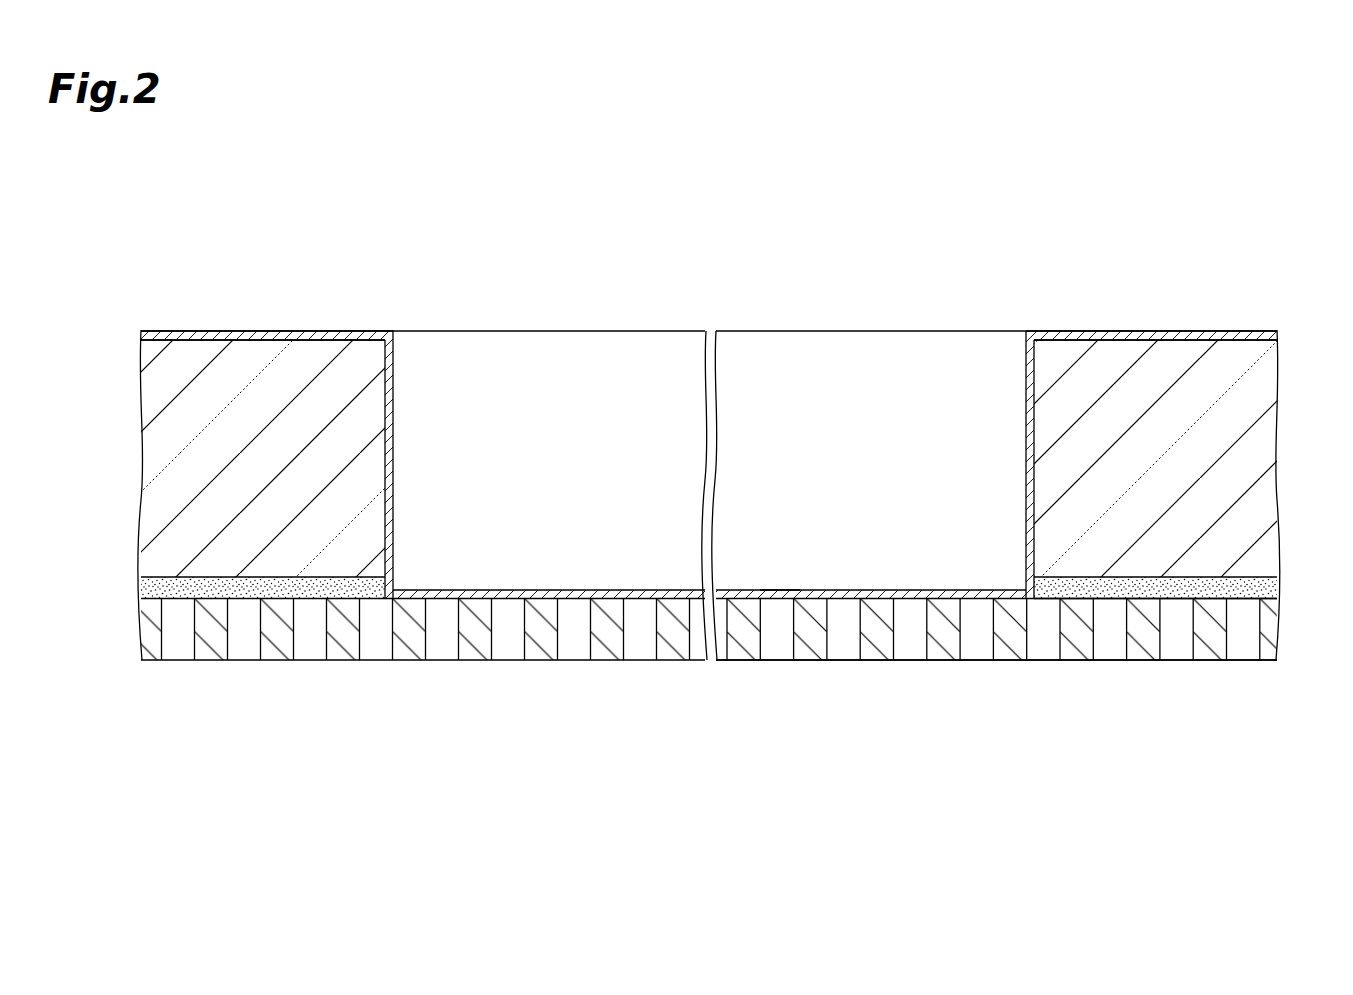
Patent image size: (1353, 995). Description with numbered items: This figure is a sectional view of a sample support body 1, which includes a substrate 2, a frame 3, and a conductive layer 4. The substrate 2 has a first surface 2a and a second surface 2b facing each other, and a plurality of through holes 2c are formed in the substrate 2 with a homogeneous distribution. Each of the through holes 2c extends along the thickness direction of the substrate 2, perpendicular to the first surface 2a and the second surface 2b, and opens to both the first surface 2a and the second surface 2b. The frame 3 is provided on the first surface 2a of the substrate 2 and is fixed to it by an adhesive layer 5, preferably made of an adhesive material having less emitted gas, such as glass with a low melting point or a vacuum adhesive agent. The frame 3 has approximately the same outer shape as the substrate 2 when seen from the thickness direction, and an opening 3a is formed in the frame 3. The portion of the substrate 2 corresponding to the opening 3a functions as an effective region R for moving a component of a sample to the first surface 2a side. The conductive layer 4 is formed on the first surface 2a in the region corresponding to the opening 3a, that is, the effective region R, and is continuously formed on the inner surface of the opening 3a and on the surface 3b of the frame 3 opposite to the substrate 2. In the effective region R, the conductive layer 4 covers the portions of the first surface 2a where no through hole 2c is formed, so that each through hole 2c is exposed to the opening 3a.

The sample support body 1 is at (1057, 230).
The substrate 2 is at (1268, 628).
The first surface 2a is at (1275, 588).
The second surface 2b is at (1267, 662).
The through hole 2c is at (227, 634).
The frame 3 is at (1270, 455).
The opening 3a is at (392, 400).
The surface 3b is at (1240, 331).
The conductive layer 4 is at (548, 590).
The adhesive layer 5 is at (152, 590).
The effective region R is at (778, 584).